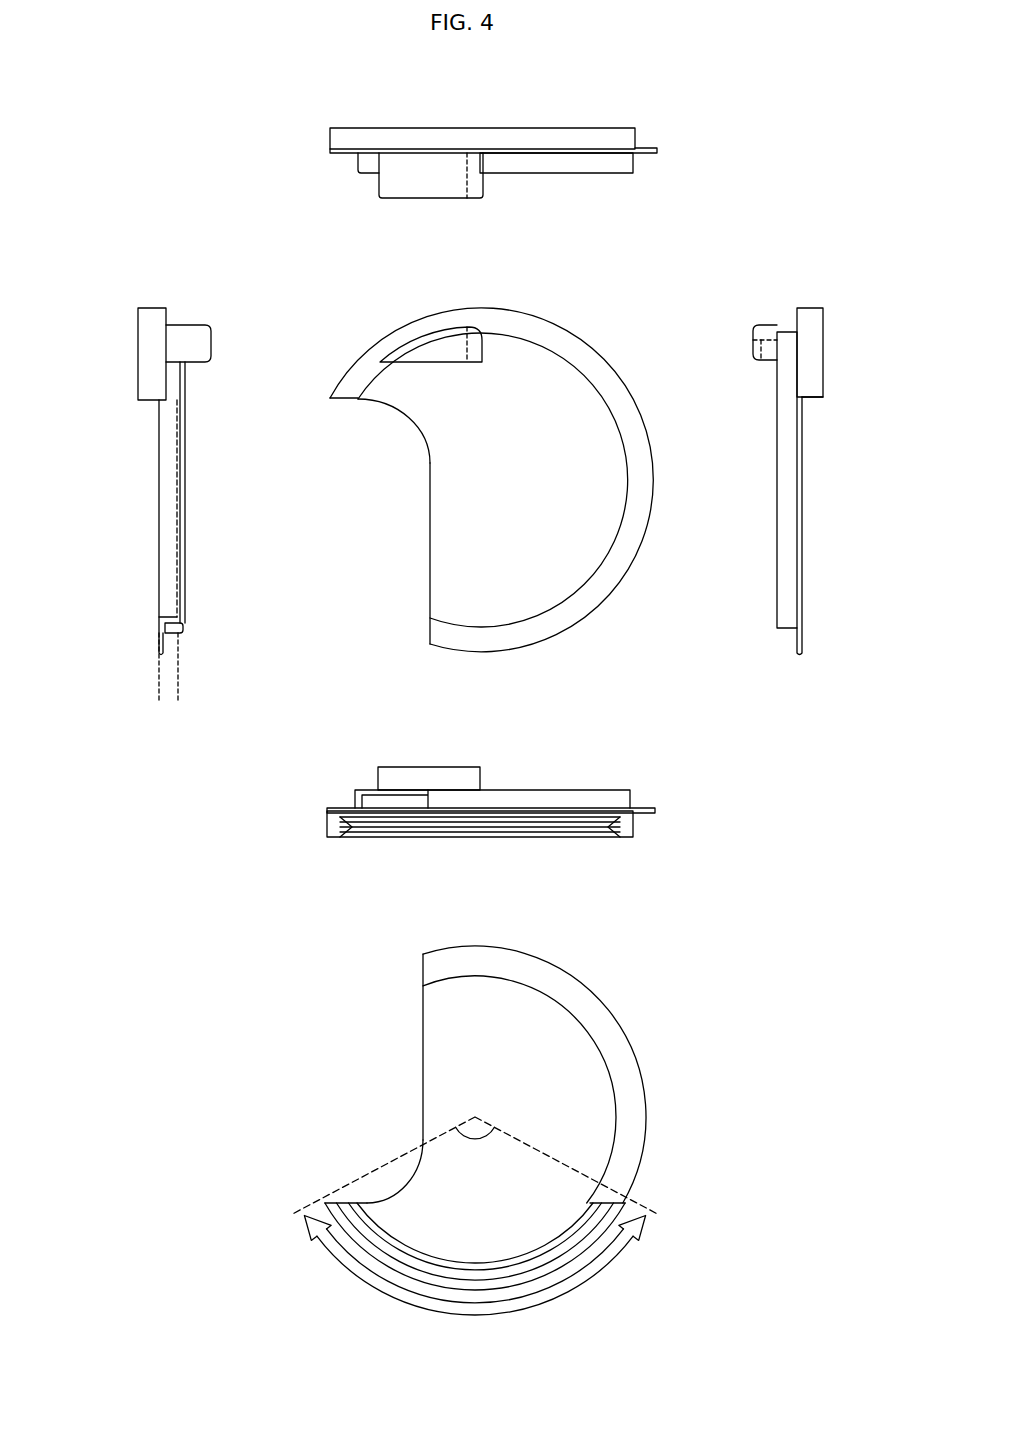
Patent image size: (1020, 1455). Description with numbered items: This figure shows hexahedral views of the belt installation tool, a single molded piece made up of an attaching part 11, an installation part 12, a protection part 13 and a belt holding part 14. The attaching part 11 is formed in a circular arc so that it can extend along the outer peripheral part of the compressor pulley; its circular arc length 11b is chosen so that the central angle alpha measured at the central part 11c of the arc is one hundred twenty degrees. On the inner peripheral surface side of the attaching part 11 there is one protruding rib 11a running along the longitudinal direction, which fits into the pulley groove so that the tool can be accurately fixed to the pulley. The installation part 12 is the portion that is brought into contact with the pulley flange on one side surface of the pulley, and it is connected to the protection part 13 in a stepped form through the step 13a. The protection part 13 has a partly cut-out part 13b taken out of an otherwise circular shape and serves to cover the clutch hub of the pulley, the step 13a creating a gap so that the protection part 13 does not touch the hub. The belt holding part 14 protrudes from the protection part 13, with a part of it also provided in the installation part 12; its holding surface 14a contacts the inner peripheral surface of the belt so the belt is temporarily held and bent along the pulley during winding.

The attaching part 11 is at (597, 130).
The rib 11a is at (590, 836).
The circular arc length 11b is at (372, 1278).
The central part 11c is at (476, 1116).
The installation part 12 is at (649, 153).
The protection part 13 is at (556, 162).
The step 13a is at (120, 690).
The partly cut-out part 13b is at (408, 418).
The belt holding part 14 is at (372, 193).
The holding surface 14a is at (428, 180).